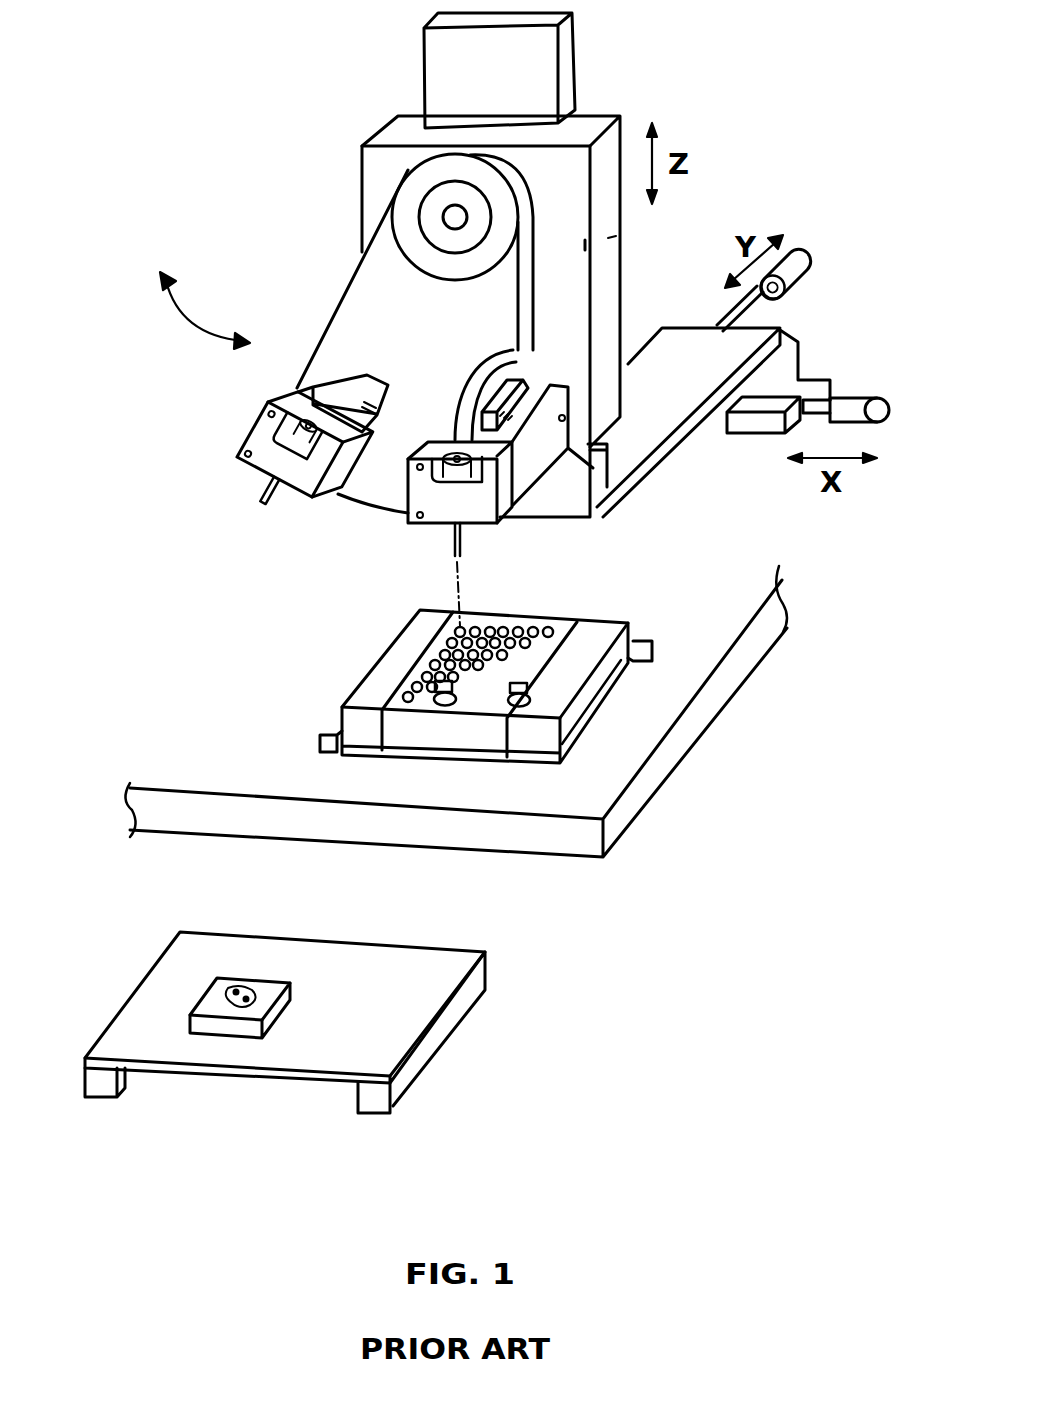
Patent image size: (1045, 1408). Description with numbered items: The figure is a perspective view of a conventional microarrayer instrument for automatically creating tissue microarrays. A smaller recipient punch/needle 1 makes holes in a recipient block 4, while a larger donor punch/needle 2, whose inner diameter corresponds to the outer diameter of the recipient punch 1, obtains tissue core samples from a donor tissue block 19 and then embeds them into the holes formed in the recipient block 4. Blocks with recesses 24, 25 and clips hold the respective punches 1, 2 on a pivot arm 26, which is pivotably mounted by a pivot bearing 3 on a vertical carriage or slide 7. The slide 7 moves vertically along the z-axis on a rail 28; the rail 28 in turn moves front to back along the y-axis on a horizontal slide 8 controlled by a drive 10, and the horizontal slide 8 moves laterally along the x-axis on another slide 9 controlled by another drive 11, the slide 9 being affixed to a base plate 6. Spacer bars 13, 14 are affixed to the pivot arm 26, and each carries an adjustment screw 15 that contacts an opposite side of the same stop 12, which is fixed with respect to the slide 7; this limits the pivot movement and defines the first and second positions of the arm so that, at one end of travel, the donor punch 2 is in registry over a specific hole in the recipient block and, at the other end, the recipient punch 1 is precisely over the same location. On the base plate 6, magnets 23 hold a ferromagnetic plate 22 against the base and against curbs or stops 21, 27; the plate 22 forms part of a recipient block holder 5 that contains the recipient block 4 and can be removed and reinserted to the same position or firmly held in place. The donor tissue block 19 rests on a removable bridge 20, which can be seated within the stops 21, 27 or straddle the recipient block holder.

The recipient punch/needle 1 is at (263, 488).
The donor punch/needle 2 is at (450, 534).
The pivot bearing 3 is at (440, 215).
The recipient block 4 is at (502, 622).
The recipient block holder 5 is at (607, 605).
The base plate 6 is at (617, 738).
The vertical carriage or slide 7 is at (620, 120).
The horizontal slide 8 is at (790, 363).
The slide 9 is at (802, 388).
The drive 10 is at (800, 262).
The drive 11 is at (862, 400).
The stop 12 is at (520, 380).
The spacer bar 13 is at (540, 463).
The spacer bar 14 is at (330, 388).
The adjustment screw 15 is at (588, 372).
The donor tissue block 19 is at (222, 1025).
The removable bridge 20 is at (427, 1047).
The curb or stop 21 is at (320, 733).
The ferromagnetic plate 22 is at (620, 692).
The magnets 23 is at (445, 705).
The block with recess 24 is at (237, 457).
The block with recess 25 is at (500, 526).
The pivot arm 26 is at (347, 323).
The curb or stop 27 is at (634, 640).
The rail 28 is at (527, 70).